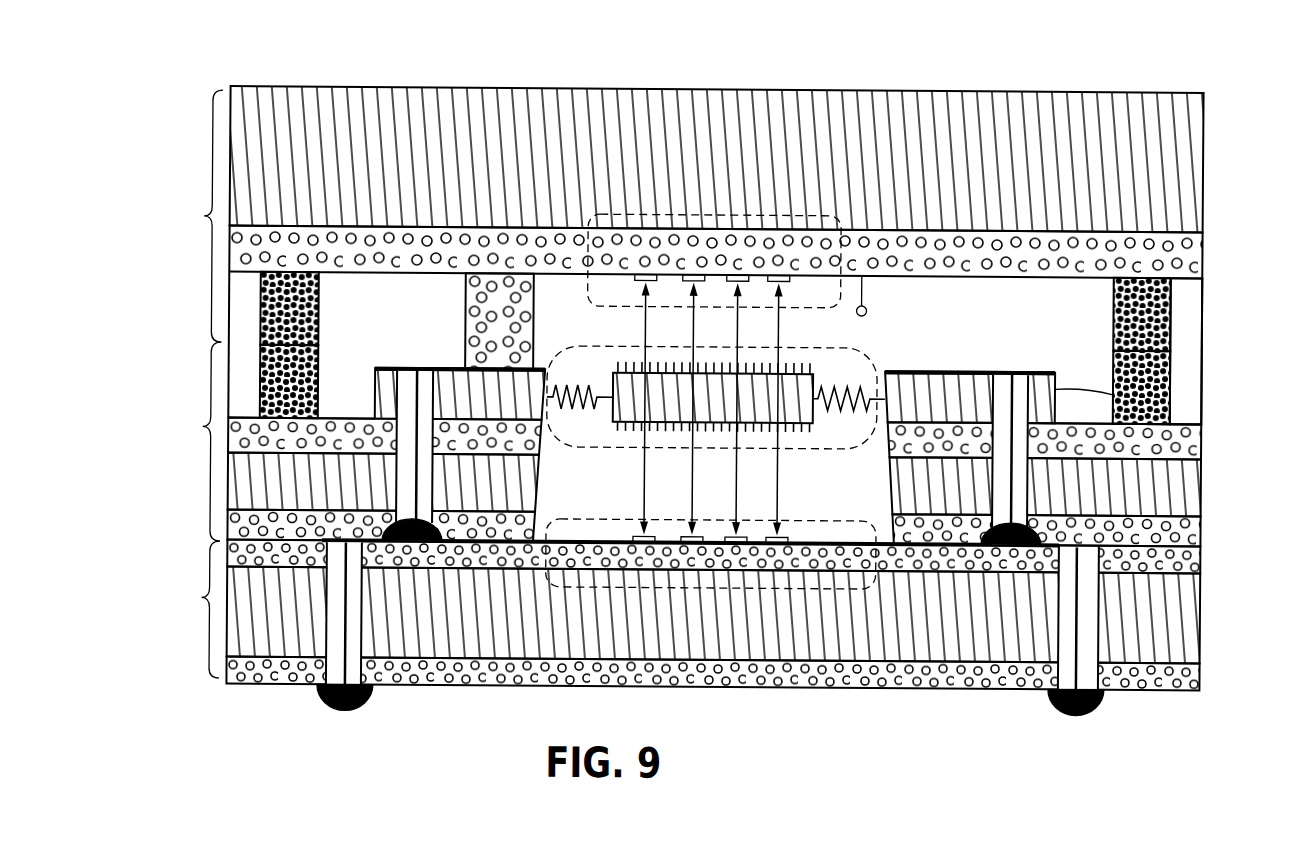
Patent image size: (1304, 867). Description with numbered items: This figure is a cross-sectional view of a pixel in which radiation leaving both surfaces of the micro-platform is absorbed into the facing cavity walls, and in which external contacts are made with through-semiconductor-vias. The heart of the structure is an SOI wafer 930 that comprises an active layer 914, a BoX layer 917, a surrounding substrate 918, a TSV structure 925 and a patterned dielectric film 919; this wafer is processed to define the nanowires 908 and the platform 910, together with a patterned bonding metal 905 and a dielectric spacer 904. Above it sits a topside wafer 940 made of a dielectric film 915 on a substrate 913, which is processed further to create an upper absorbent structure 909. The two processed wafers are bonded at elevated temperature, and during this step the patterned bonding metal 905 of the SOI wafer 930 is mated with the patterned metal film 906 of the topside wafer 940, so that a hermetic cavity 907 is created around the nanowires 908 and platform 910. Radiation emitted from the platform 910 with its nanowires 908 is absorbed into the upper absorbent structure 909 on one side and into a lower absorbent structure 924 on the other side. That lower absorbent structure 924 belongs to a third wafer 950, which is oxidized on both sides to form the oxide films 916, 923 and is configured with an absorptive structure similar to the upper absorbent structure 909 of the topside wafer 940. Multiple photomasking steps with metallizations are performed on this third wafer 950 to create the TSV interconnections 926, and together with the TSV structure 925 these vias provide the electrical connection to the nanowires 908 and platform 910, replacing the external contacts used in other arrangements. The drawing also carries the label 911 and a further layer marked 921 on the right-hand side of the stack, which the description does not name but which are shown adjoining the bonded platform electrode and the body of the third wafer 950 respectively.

The dielectric spacer 904 is at (460, 320).
The patterned bonding metal 905 is at (1170, 365).
The patterned metal film 906 is at (1170, 303).
The hermetic cavity 907 is at (862, 276).
The nanowires 908 is at (572, 336).
The upper absorbent structure 909 is at (711, 216).
The platform 910 is at (871, 359).
The platform electrode 911 is at (968, 371).
The substrate 913 is at (1202, 157).
The active layer 914 is at (1202, 429).
The dielectric film 915 is at (1202, 252).
The oxidized side 916 is at (1202, 562).
The BoX layer 917 is at (1202, 452).
The surrounding substrate 918 is at (1202, 494).
The patterned dielectric film 919 is at (1202, 524).
The package substrate 921 is at (1202, 620).
The oxidized side 923 is at (1202, 677).
The lower absorbent structure 924 is at (724, 590).
The TSV structure 925 is at (1013, 493).
The TSV interconnections 926 is at (1081, 643).
The SOI wafer 930 is at (183, 442).
The topside wafer 940 is at (184, 216).
The third wafer 950 is at (182, 610).